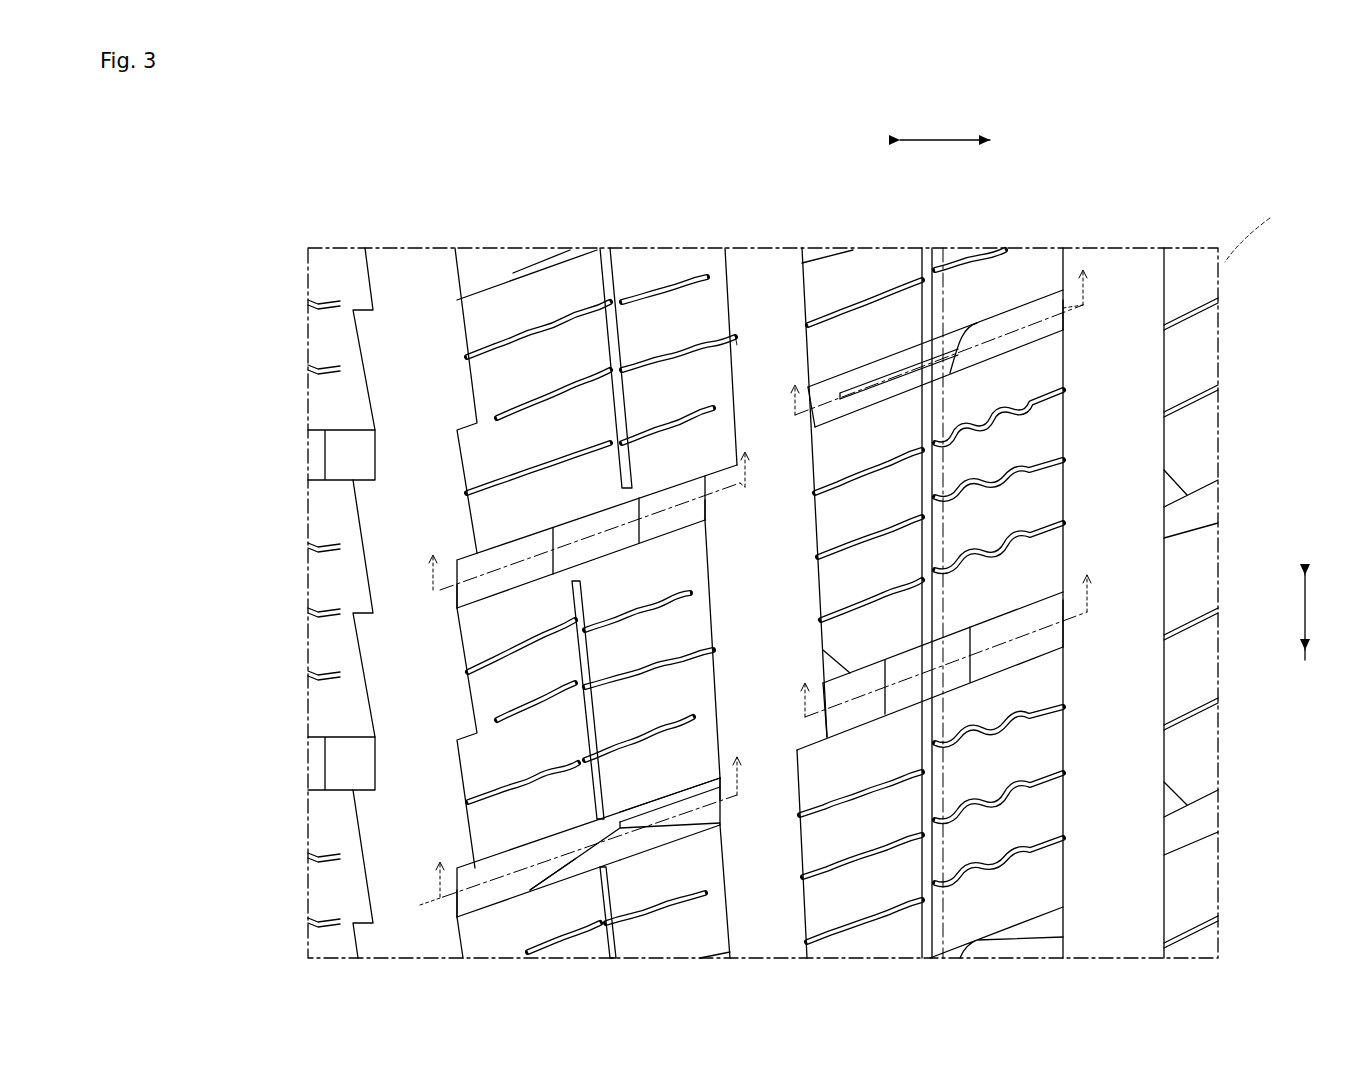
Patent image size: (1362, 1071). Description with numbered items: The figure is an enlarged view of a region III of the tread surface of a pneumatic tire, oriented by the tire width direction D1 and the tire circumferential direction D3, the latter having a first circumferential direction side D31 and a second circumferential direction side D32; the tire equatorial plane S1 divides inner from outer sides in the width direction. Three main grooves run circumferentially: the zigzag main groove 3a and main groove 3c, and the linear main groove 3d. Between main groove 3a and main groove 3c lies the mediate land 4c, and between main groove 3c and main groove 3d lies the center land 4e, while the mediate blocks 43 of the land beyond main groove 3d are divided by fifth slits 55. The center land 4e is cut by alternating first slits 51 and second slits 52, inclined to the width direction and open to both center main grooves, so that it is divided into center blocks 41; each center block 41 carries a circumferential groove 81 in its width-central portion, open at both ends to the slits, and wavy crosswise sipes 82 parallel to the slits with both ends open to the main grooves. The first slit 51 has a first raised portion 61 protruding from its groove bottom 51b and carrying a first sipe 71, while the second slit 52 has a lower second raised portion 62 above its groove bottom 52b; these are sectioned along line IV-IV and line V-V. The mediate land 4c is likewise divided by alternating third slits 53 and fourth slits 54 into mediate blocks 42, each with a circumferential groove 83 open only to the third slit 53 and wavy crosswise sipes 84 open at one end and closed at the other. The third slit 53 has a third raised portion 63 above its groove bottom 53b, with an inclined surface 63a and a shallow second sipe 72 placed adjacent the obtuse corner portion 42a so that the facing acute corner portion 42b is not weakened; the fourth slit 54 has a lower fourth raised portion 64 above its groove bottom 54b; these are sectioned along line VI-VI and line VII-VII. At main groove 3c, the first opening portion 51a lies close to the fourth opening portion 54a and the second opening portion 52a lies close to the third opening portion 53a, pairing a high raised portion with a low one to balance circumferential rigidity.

The main groove 3a is at (418, 262).
The main groove 3c is at (768, 265).
The main groove 3d is at (1122, 265).
The mediate land 4c is at (725, 222).
The center land 4e is at (805, 222).
The center block 41 is at (800, 282).
The mediate block 42 is at (738, 333).
The obtuse corner portion 42a is at (712, 790).
The acute corner portion 42b is at (712, 834).
The mediate block 43 is at (1162, 378).
The first slit 51 is at (1066, 318).
The first opening portion 51a is at (802, 412).
The groove bottom 51b is at (1058, 335).
The second slit 52 is at (1066, 627).
The second opening portion 52a is at (810, 720).
The groove bottom 52b is at (1063, 645).
The third slit 53 is at (452, 292).
The third opening portion 53a is at (724, 792).
The groove bottom 53b is at (460, 898).
The fourth slit 54 is at (708, 505).
The fourth opening portion 54a is at (710, 522).
The groove bottom 54b is at (460, 600).
The fifth slit 55 is at (1162, 545).
The first raised portion 61 is at (845, 397).
The second raised portion 62 is at (960, 675).
The third raised portion 63 is at (700, 825).
The inclined surface 63a is at (560, 845).
The fourth raised portion 64 is at (600, 553).
The first sipe 71 is at (867, 387).
The second sipe 72 is at (668, 812).
The circumferential groove 81 is at (920, 485).
The crosswise sipe 82 is at (977, 473).
The circumferential groove 83 is at (578, 667).
The crosswise sipe 84 is at (558, 750).
The tire equatorial plane S1 is at (942, 255).
The tire width direction D1 is at (945, 128).
The tire circumferential direction D3 is at (1320, 612).
The first circumferential direction side D31 is at (1305, 554).
The second circumferential direction side D32 is at (1305, 672).
The region III is at (1259, 229).
The line IV- IV is at (940, 337).
The line V- V is at (944, 632).
The line VI- VI is at (582, 814).
The line VII- VII is at (590, 507).